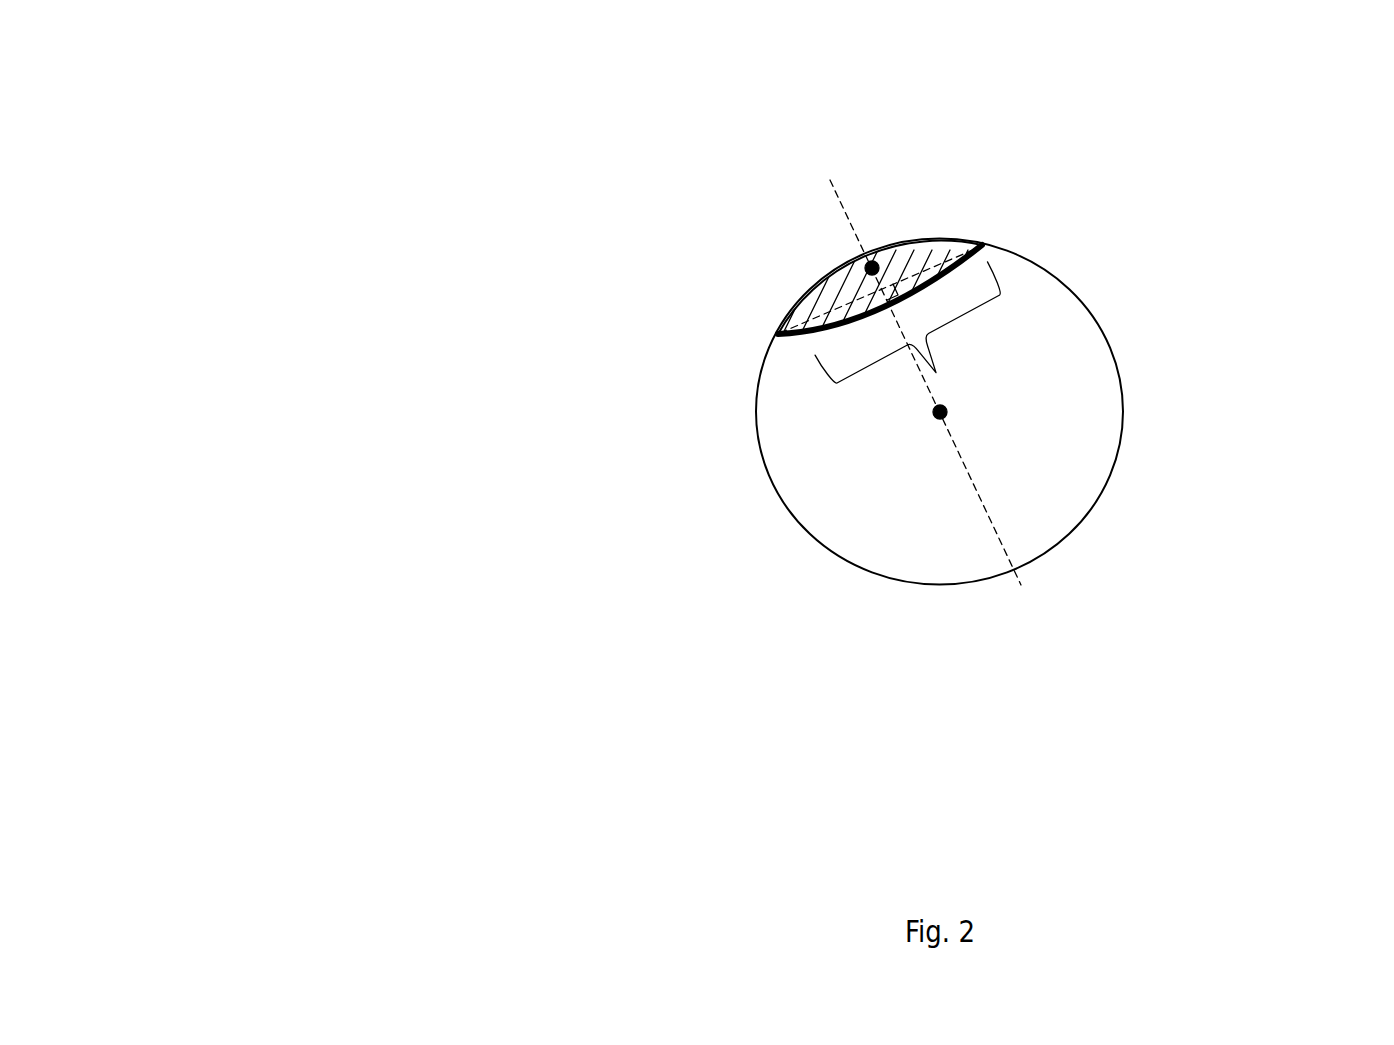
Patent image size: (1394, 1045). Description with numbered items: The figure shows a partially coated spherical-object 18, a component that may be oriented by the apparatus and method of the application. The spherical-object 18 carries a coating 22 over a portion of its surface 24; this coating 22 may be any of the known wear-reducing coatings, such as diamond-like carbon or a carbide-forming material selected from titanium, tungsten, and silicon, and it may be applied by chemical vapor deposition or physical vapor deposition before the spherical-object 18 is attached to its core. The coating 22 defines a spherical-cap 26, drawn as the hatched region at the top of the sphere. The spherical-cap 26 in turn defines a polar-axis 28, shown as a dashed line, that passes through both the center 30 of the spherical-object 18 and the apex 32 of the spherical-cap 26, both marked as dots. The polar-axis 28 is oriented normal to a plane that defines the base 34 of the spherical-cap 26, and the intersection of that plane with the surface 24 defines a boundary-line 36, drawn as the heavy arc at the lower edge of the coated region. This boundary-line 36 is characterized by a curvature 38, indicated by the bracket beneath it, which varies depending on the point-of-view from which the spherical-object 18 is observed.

The spherical-object 18 is at (758, 305).
The coating 22 is at (830, 302).
The surface 24 is at (1100, 505).
The spherical-cap 26 is at (908, 232).
The polar-axis 28 is at (1025, 587).
The center 30 is at (940, 417).
The apex 32 is at (866, 268).
The base 34 is at (932, 267).
The boundary-line 36 is at (780, 340).
The curvature 38 is at (937, 374).